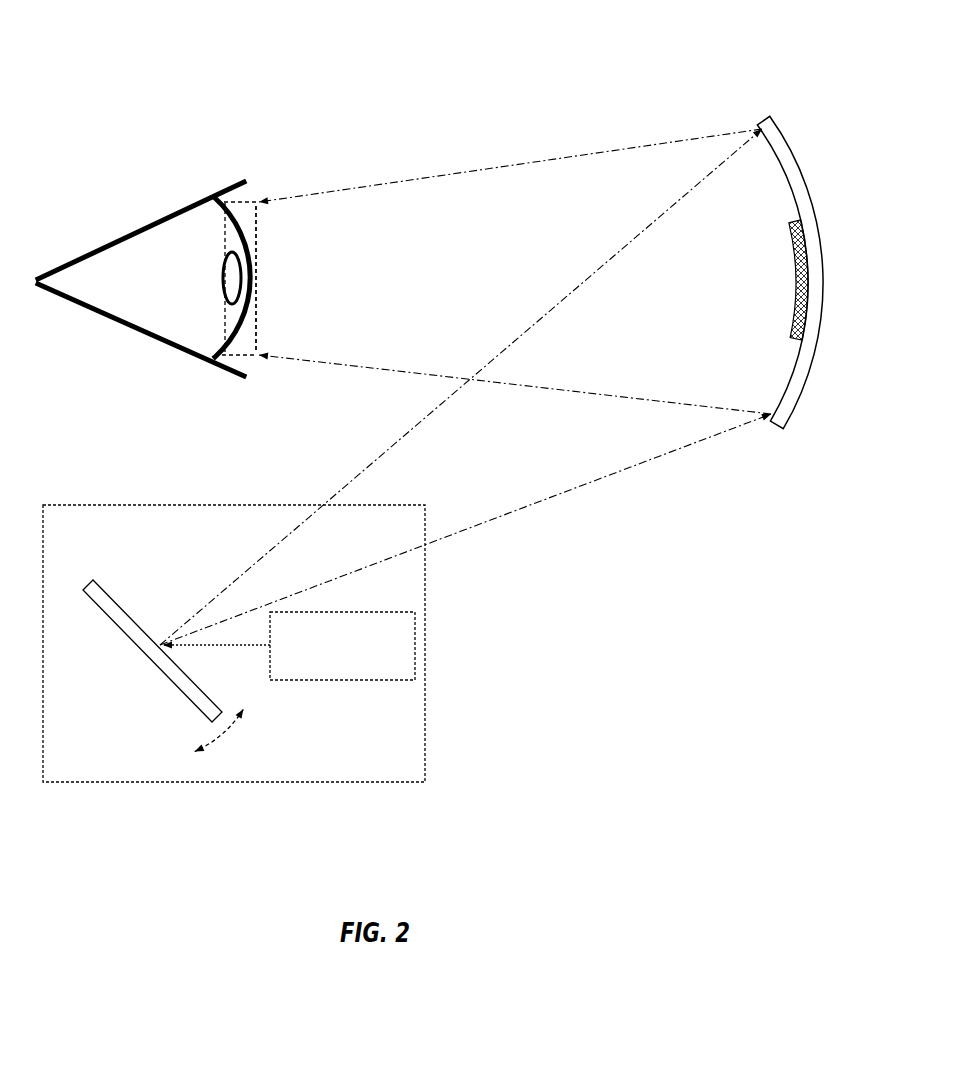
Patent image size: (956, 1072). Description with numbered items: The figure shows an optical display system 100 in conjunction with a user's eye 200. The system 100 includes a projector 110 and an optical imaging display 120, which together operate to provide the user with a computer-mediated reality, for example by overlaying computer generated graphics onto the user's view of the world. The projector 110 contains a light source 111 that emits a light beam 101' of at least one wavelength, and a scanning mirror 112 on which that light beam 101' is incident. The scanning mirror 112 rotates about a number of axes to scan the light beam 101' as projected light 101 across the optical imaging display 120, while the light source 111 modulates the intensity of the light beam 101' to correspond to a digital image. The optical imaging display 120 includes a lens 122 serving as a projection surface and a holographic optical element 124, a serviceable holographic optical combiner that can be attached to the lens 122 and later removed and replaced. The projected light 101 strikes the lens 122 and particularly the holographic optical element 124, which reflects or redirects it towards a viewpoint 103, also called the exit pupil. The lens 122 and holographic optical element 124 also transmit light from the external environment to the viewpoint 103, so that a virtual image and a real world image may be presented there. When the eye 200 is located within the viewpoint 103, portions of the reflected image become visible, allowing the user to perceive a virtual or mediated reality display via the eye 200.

The system 100 is at (153, 56).
The eye 200 is at (118, 230).
The viewpoint 103 is at (244, 203).
The optical imaging display 120 is at (665, 224).
The lens 122 is at (780, 163).
The holographic optical element 124 is at (744, 286).
The projected light 101 is at (465, 387).
The light beam 101' is at (216, 637).
The projector 110 is at (153, 562).
The light source 111 is at (360, 668).
The scanning mirror 112 is at (133, 761).